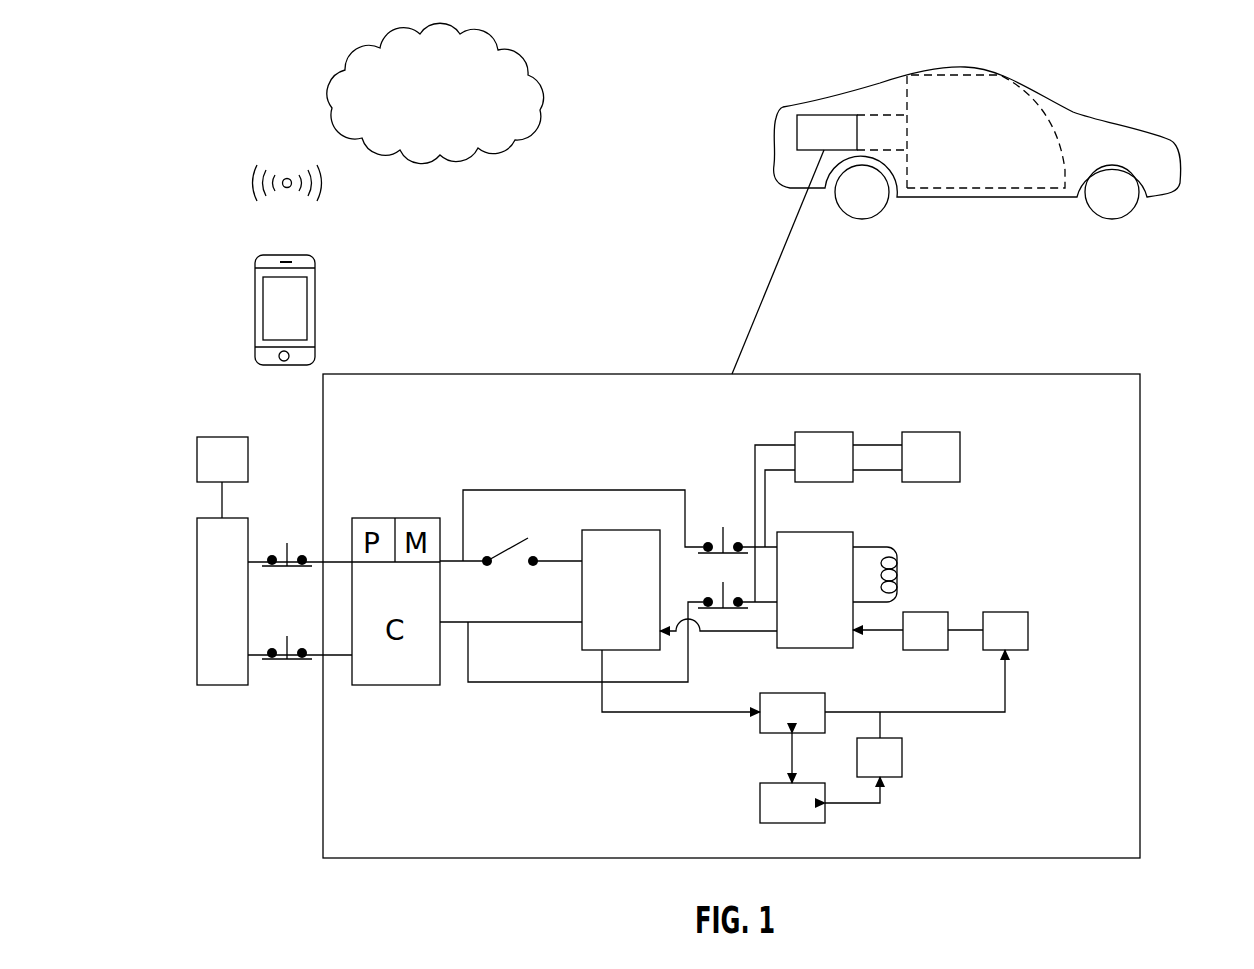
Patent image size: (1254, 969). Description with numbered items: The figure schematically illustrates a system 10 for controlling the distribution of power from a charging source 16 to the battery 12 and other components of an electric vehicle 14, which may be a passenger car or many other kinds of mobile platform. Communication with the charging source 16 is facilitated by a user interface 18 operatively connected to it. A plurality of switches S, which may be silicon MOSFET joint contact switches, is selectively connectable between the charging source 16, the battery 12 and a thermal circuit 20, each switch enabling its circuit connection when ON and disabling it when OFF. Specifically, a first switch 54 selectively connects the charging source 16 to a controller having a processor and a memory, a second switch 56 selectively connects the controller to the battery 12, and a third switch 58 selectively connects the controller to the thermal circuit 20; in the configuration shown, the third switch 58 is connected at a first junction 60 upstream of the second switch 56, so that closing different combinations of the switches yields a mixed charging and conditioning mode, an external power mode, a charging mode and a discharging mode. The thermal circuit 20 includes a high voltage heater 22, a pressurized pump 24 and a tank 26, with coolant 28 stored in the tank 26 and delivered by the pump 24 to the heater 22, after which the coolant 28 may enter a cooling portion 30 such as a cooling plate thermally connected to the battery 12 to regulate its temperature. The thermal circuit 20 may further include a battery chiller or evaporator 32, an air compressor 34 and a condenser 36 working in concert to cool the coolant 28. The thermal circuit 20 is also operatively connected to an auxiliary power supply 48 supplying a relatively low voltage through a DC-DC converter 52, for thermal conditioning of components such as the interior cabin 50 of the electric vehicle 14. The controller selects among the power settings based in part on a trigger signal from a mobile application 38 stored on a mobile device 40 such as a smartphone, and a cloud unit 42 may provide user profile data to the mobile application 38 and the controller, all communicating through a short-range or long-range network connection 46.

The system 10 is at (455, 365).
The battery 12 is at (620, 530).
The electric vehicle 14 is at (813, 93).
The charging source 16 is at (210, 518).
The user interface 18 is at (210, 437).
The thermal circuit 20 is at (930, 590).
The high voltage heater 22 is at (823, 532).
The pressurized pump 24 is at (925, 650).
The tank 26 is at (1008, 612).
The coolant 28 is at (720, 640).
The cooling portion 30 is at (578, 645).
The battery chiller or evaporator 32 is at (770, 733).
The air compressor 34 is at (890, 778).
The condenser 36 is at (790, 823).
The mobile application 38 is at (262, 310).
The mobile device 40 is at (318, 290).
The cloud unit 42 is at (500, 47).
The network connection 46 is at (285, 158).
The auxiliary power supply 48 is at (928, 432).
The interior cabin 50 is at (1020, 88).
The DC-DC converter 52 is at (822, 432).
The first switch 54 is at (288, 535).
The second switch 56 is at (495, 542).
The third switch 58 is at (715, 527).
The first junction 60 is at (470, 585).
The plurality of switches S is at (515, 470).